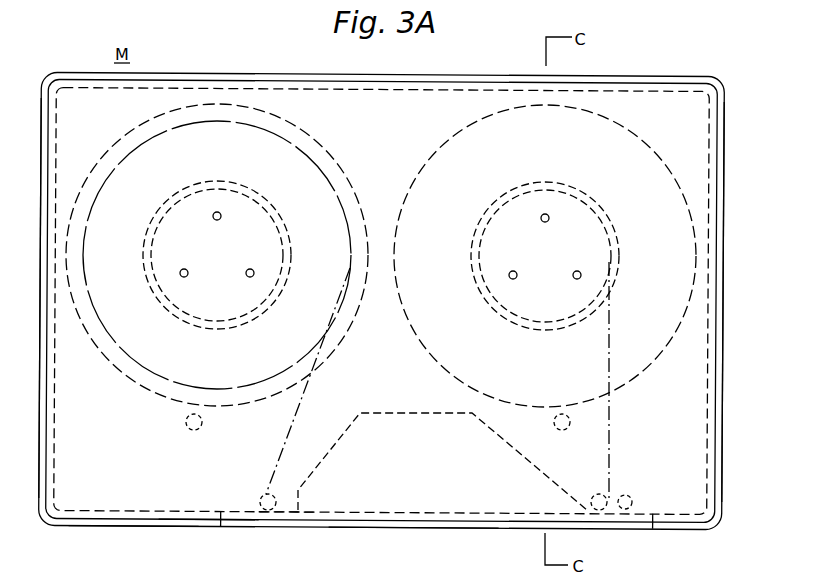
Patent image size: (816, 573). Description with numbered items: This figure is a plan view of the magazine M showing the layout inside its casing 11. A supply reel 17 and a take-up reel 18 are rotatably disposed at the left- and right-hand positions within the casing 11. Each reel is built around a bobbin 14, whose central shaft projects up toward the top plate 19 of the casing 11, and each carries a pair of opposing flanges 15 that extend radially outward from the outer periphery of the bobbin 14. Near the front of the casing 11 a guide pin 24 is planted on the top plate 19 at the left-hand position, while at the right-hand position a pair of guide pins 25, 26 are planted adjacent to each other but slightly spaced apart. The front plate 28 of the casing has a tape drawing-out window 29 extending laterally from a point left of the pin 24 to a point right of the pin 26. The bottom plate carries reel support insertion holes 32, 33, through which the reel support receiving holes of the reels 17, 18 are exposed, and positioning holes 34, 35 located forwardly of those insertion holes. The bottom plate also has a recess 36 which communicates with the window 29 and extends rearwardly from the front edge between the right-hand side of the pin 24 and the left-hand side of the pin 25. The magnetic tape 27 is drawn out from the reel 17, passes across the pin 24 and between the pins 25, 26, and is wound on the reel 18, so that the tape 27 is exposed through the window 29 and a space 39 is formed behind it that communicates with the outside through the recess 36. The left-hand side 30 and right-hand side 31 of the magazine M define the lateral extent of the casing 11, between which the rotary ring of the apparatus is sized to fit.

The casing 11 is at (381, 303).
The bobbin 14 is at (393, 259).
The flange 15 is at (381, 255).
The supply reel 17 is at (308, 134).
The take-up reel 18 is at (457, 137).
The top plate 19 is at (115, 494).
The guide pin 24 is at (263, 496).
The guide pin 25 is at (600, 511).
The guide pin 26 is at (631, 498).
The magnetic tape 27 is at (303, 404).
The front plate 28 is at (199, 526).
The tape drawing-out window 29 is at (289, 517).
The left-hand side 30 is at (43, 311).
The right-hand side 31 is at (720, 318).
The reel support insertion hole 32 is at (287, 236).
The reel support insertion hole 33 is at (613, 236).
The positioning hole 34 is at (195, 430).
The positioning hole 35 is at (562, 430).
The recess 36 is at (412, 418).
The space 39 is at (413, 492).